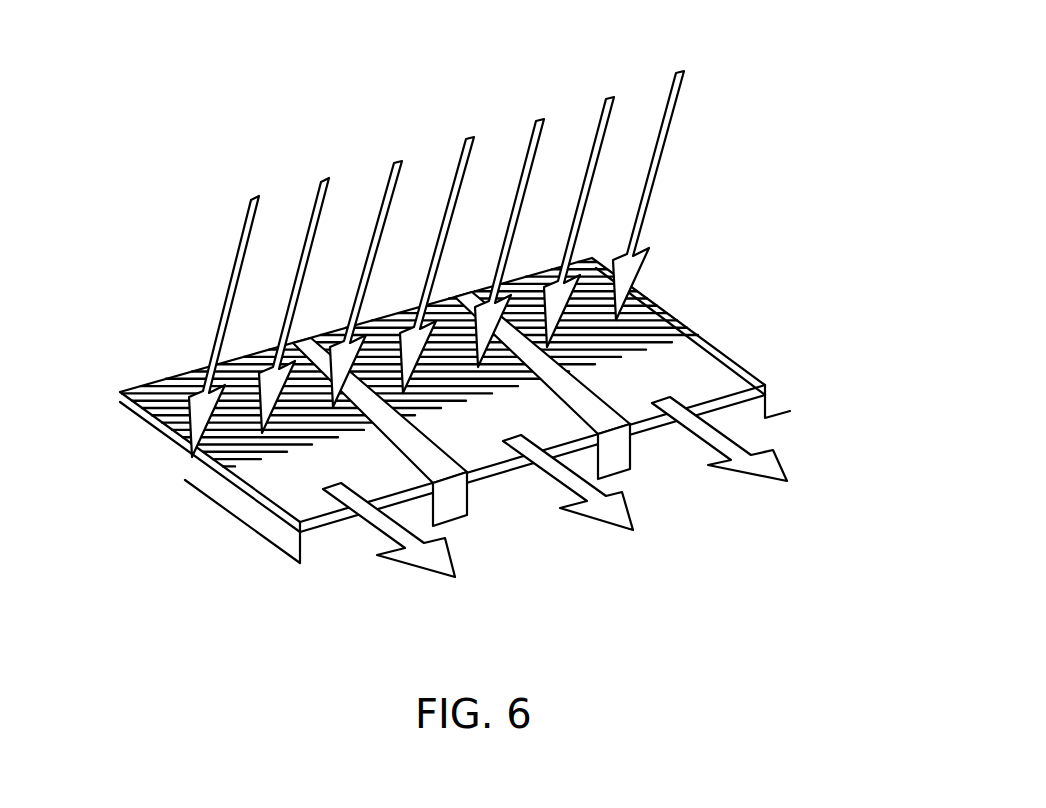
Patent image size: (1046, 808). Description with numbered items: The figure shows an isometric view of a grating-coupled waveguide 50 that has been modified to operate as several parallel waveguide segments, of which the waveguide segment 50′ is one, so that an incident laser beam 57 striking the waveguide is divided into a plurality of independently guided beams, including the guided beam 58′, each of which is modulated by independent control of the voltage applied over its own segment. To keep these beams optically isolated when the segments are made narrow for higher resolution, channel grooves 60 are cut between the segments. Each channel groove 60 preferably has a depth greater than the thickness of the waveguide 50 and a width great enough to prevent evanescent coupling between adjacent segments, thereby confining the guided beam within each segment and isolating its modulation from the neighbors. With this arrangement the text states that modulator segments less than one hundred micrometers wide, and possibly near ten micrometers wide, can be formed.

The grating-coupled waveguide 50 is at (808, 386).
The waveguide segment 50′ is at (185, 383).
The incident laser beam 57 is at (705, 52).
The guided beam 58′ is at (455, 572).
The channel groove 60 is at (277, 557).